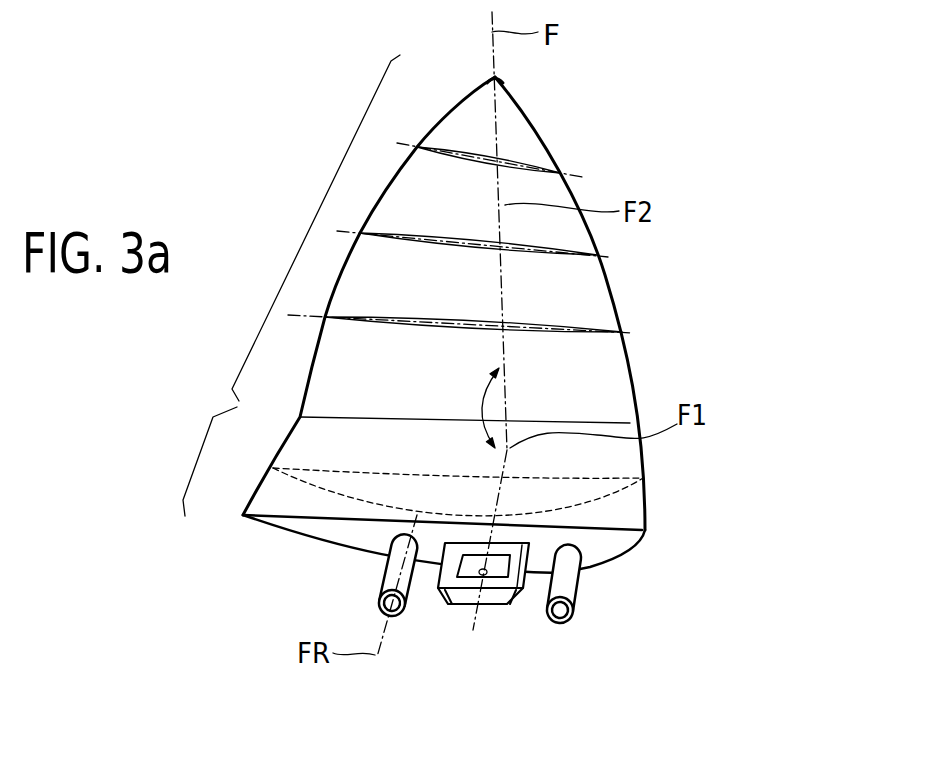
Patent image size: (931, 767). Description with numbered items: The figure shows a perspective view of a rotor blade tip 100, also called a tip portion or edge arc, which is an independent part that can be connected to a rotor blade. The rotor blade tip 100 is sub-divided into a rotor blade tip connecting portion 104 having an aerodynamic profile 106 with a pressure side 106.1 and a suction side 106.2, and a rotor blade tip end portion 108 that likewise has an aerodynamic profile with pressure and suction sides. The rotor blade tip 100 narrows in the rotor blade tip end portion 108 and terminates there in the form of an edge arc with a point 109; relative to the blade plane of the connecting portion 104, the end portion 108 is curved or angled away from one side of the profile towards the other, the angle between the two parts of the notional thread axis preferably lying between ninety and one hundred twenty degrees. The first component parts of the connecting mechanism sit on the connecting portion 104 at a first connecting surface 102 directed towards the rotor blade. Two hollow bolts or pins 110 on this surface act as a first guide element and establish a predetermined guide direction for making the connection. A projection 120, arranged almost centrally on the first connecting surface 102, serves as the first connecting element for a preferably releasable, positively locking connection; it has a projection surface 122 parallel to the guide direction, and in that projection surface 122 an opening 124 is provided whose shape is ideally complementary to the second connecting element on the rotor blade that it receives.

The rotor blade tip 100 is at (703, 228).
The first connecting surface 102 is at (607, 552).
The rotor blade tip connecting portion 104 is at (200, 460).
The aerodynamic profile 106 is at (526, 488).
The pressure side 106.1 is at (600, 517).
The suction side 106.2 is at (625, 477).
The rotor blade tip end portion 108 is at (317, 202).
The point 109 is at (506, 78).
The hollow bolts or pins 110 is at (390, 573).
The projection 120 is at (501, 580).
The projection surface 122 is at (513, 575).
The opening 124 is at (464, 566).